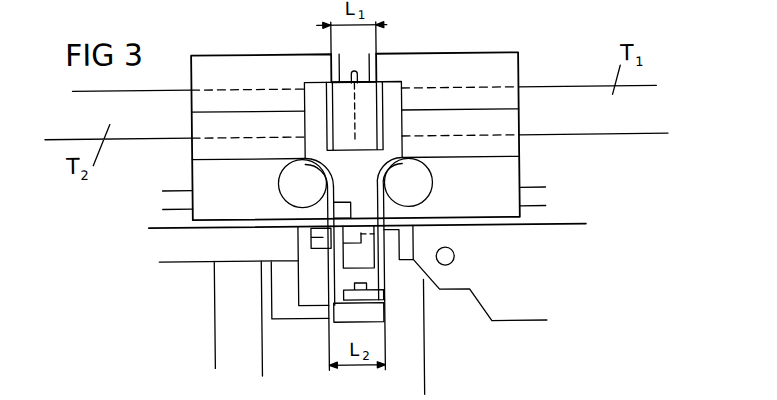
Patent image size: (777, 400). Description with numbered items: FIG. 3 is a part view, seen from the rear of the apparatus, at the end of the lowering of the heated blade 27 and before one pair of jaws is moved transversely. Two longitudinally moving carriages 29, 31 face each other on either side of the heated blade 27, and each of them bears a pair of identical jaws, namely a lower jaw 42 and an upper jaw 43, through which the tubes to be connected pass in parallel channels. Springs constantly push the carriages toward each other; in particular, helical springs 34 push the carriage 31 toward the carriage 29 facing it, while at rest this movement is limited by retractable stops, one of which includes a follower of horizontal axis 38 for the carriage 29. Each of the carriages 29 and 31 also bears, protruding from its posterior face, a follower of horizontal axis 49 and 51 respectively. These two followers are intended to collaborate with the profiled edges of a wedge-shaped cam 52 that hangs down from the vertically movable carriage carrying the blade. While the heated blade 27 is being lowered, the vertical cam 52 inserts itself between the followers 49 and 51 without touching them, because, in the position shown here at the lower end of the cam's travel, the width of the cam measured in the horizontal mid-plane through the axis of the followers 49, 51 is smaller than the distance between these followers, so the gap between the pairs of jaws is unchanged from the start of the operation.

The heated blade 27 is at (377, 72).
The longitudinally moving carriage 29 is at (519, 178).
The longitudinally moving carriage 31 is at (207, 173).
The helical springs 34 is at (317, 237).
The follower of horizontal axis 38 is at (360, 322).
The lower jaw 42 is at (519, 123).
The upper jaw 43 is at (519, 72).
The follower of horizontal axis 49 is at (432, 186).
The follower of horizontal axis 51 is at (279, 191).
The wedge-shaped cam 52 is at (360, 255).